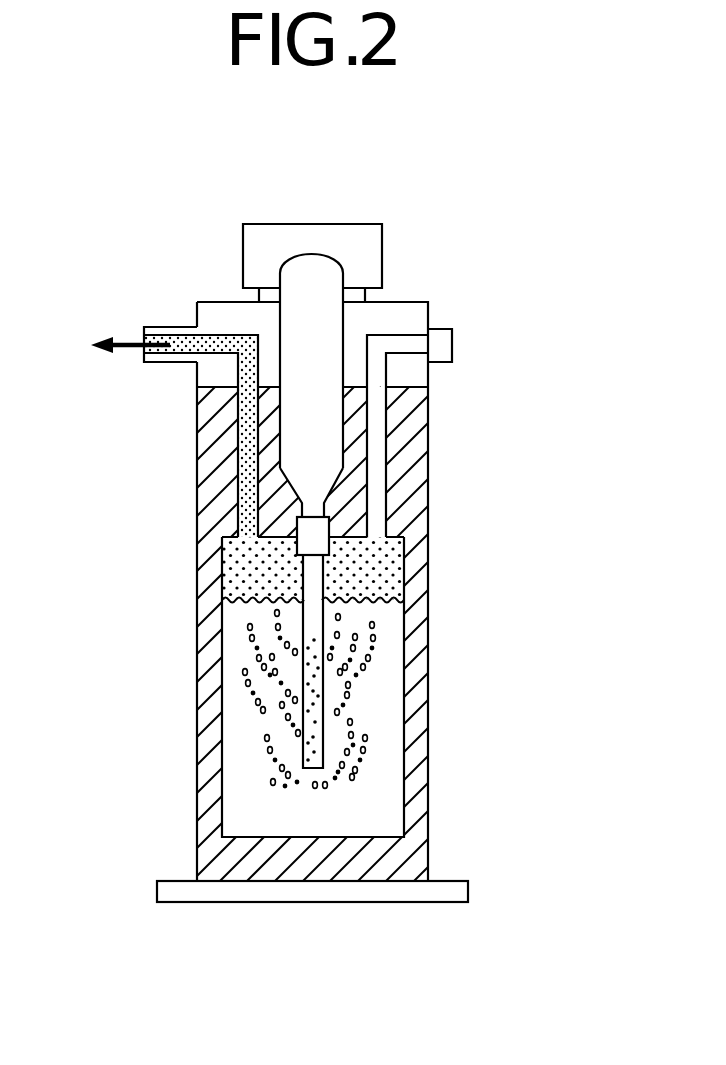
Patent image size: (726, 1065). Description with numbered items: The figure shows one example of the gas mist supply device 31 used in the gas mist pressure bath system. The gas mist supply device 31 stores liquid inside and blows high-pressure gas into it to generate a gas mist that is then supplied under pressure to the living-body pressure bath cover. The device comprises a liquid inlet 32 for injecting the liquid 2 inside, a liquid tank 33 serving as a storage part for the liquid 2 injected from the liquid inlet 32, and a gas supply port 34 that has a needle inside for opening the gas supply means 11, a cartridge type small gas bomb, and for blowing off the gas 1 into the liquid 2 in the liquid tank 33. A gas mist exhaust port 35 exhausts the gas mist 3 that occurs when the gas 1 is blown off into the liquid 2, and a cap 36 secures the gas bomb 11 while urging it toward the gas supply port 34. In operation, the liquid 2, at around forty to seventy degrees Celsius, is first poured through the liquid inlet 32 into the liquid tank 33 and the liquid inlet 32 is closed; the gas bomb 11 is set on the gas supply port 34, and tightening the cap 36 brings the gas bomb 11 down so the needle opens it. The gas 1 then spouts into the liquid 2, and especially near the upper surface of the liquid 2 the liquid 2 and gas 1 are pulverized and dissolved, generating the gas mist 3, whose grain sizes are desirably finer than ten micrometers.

The gas mist supply device 31 is at (165, 216).
The cap 36 is at (352, 224).
The liquid inlet 32 is at (440, 326).
The gas mist exhaust port 35 is at (172, 332).
The gas supply means 11 is at (283, 440).
The gas supply port 34 is at (317, 538).
The gas mist 3 is at (235, 565).
The liquid tank 33 is at (405, 674).
The gas 1 is at (247, 683).
The liquid 2 is at (235, 755).